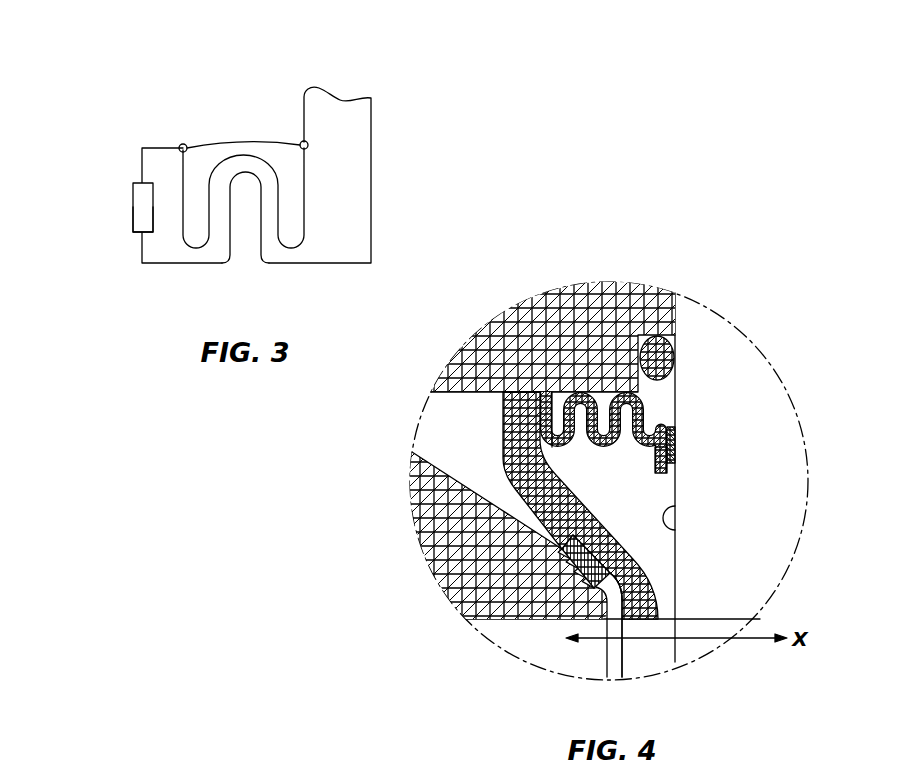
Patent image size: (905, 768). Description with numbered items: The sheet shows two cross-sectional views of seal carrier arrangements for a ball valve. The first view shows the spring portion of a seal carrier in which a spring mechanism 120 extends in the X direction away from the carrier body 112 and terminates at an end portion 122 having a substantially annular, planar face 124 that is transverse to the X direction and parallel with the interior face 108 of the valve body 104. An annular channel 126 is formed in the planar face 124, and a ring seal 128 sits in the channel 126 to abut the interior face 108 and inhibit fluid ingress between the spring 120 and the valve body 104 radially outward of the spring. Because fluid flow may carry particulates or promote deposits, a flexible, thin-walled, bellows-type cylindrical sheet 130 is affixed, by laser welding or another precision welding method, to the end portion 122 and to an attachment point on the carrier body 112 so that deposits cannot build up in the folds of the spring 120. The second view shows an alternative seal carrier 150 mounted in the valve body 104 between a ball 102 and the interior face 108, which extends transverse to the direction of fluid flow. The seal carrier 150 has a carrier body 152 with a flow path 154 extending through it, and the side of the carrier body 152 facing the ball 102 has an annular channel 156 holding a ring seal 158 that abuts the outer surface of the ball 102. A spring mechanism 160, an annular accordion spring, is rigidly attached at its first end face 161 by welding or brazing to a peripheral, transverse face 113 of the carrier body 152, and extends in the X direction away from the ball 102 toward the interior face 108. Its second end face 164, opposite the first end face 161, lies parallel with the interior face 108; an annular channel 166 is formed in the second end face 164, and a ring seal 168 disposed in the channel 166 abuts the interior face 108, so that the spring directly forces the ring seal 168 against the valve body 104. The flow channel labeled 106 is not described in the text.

In FIG. 4, the ball 102 is at (432, 512).
In FIG. 4, the valve body 104 is at (644, 306).
In FIG. 4, the fluid channel 106 is at (583, 660).
In FIG. 4, the interior face 108 is at (672, 509).
In FIG. 3, the carrier body 112 is at (360, 117).
In FIG. 4, the peripheral, transverse face 113 is at (555, 395).
In FIG. 3, the spring mechanism 120 is at (240, 264).
In FIG. 3, the end portion 122 is at (242, 175).
In FIG. 3, the annular, planar face 124 is at (142, 173).
In FIG. 3, the annular channel 126 is at (132, 195).
In FIG. 3, the ring seal 128 is at (132, 224).
In FIG. 3, the bellows-type cylindrical sheet 130 is at (235, 142).
In FIG. 4, the seal carrier 150 is at (486, 429).
In FIG. 4, the carrier body 152 is at (645, 585).
In FIG. 4, the flow path 154 is at (642, 659).
In FIG. 4, the annular channel 156 is at (560, 585).
In FIG. 4, the ring seal 158 is at (582, 584).
In FIG. 4, the spring mechanism 160 is at (581, 383).
In FIG. 4, the first end face 161 is at (537, 442).
In FIG. 4, the second end face 164 is at (673, 418).
In FIG. 4, the annular channel 166 is at (674, 443).
In FIG. 4, the ring seal 168 is at (671, 455).